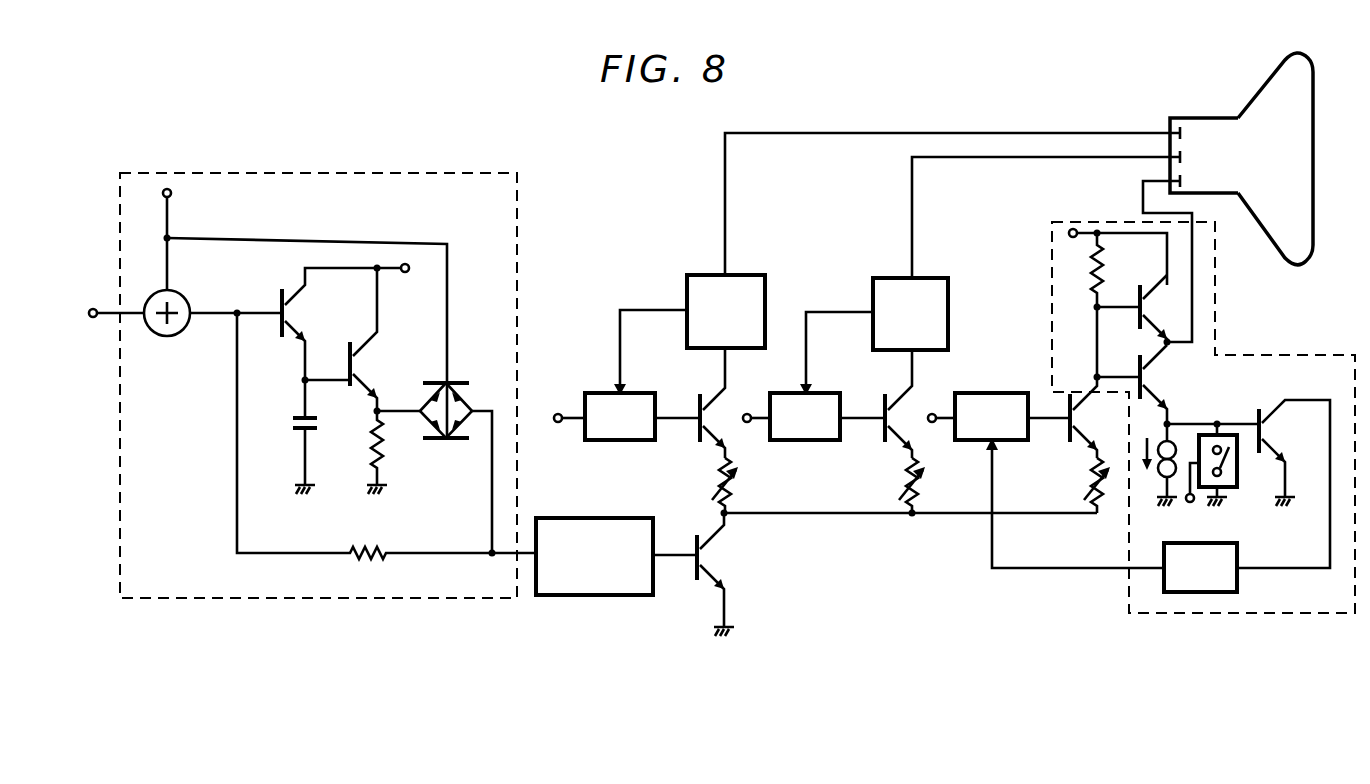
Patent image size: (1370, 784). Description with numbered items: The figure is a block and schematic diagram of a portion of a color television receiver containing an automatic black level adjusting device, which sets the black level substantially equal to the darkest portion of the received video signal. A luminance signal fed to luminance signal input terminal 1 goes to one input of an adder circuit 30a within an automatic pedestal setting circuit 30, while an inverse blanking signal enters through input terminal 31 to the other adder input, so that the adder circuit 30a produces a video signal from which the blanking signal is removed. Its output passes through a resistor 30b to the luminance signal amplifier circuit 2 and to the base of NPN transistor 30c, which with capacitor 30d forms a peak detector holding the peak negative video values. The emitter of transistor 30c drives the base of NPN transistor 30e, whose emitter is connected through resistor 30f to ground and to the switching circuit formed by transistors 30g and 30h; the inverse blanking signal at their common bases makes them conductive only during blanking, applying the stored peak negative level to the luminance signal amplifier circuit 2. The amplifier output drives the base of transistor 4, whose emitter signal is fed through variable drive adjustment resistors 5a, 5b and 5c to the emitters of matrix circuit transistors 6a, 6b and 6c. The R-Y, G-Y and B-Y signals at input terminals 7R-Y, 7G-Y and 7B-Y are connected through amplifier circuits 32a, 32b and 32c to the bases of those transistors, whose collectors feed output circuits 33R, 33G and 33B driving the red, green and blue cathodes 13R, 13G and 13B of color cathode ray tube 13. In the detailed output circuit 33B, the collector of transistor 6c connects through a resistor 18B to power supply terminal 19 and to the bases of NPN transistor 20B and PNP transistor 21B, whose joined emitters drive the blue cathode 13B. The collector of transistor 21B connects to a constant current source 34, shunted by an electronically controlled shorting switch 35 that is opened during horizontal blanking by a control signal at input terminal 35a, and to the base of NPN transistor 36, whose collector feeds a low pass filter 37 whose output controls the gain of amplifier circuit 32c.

The luminance signal input terminal 1 is at (93, 318).
The luminance signal amplifier circuit 2 is at (614, 598).
The transistor 4 is at (694, 583).
The variable drive adjustment resistor 5a is at (738, 492).
The variable drive adjustment resistor 5b is at (925, 494).
The variable drive adjustment resistor 5c is at (1108, 503).
The matrix circuit transistor 6a is at (697, 445).
The matrix circuit transistor 6b is at (883, 396).
The matrix circuit transistor 6c is at (1066, 396).
The input terminal 7R-Y is at (560, 413).
The input terminal 7G-Y is at (749, 413).
The input terminal 7B-Y is at (934, 413).
The color cathode ray tube 13 is at (1315, 108).
The red cathode 13R is at (1182, 120).
The green cathode 13G is at (1182, 150).
The blue cathode 13B is at (1182, 178).
The resistor 18B is at (1104, 283).
The power supply terminal 19 is at (1073, 238).
The NPN transistor 20B is at (1136, 318).
The PNP transistor 21B is at (1146, 388).
The automatic pedestal setting circuit 30 is at (448, 174).
The adder circuit 30a is at (182, 336).
The resistor 30b is at (368, 560).
The NPN transistor 30c is at (280, 340).
The capacitor 30d is at (292, 432).
The NPN transistor 30e is at (350, 388).
The resistor 30f is at (385, 440).
The NPN transistor 30g is at (455, 380).
The NPN transistor 30h is at (448, 442).
The input terminal 31 is at (172, 193).
The amplifier circuit 32a is at (617, 443).
The amplifier circuit 32b is at (830, 443).
The amplifier circuit 32c is at (1018, 443).
The output circuit 33R is at (742, 275).
The output circuit 33G is at (928, 278).
The output circuit 33B is at (1322, 614).
The constant current source 34 is at (1158, 482).
The electronically controlled shorting switch 35 is at (1240, 456).
The input terminal 35a is at (1194, 502).
The NPN transistor 36 is at (1252, 402).
The low pass filter 37 is at (1238, 587).